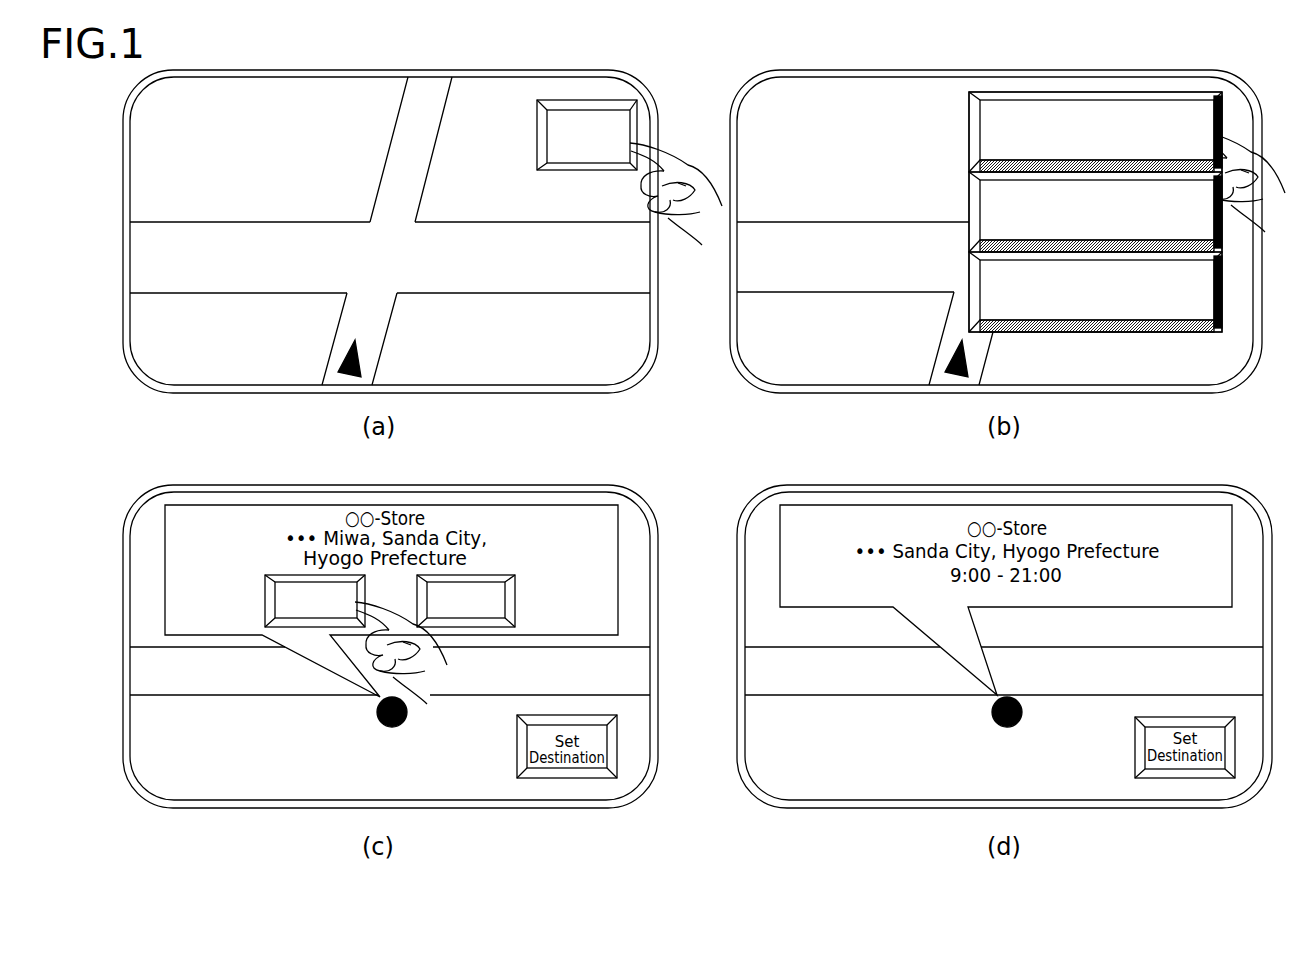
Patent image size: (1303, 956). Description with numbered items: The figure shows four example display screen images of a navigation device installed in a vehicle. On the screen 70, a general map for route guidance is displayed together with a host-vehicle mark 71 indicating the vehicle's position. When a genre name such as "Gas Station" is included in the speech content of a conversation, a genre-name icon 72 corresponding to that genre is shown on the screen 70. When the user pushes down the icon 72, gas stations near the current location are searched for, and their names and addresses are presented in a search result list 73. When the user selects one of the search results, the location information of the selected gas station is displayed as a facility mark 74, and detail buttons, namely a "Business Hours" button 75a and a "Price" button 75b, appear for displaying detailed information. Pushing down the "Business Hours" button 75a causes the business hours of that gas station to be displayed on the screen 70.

The screen 70 is at (495, 70).
The host-vehicle mark 71 is at (345, 358).
The genre-name icon 72 is at (593, 99).
The search result list 73 is at (1225, 105).
The facility mark 74 is at (394, 727).
The Business Hours button 75a is at (283, 574).
The Price button 75b is at (490, 574).